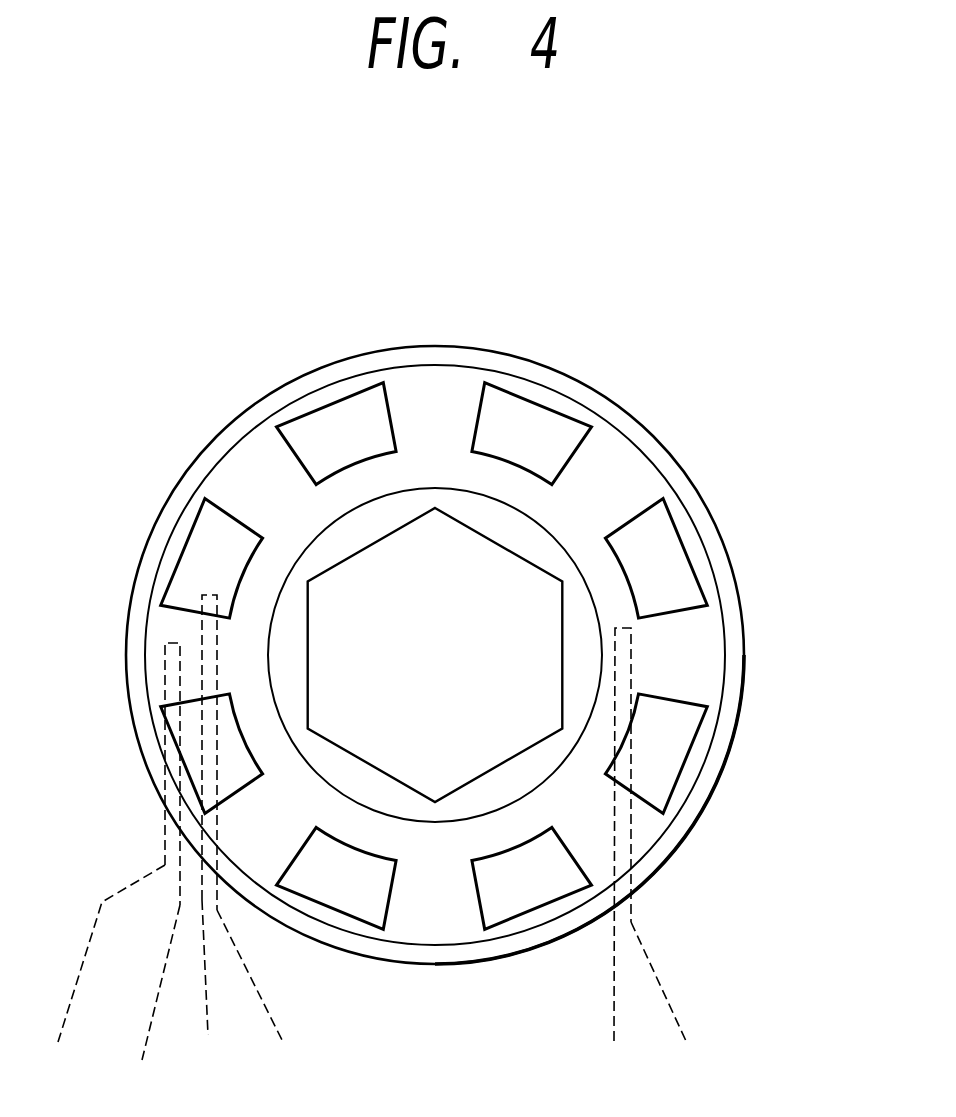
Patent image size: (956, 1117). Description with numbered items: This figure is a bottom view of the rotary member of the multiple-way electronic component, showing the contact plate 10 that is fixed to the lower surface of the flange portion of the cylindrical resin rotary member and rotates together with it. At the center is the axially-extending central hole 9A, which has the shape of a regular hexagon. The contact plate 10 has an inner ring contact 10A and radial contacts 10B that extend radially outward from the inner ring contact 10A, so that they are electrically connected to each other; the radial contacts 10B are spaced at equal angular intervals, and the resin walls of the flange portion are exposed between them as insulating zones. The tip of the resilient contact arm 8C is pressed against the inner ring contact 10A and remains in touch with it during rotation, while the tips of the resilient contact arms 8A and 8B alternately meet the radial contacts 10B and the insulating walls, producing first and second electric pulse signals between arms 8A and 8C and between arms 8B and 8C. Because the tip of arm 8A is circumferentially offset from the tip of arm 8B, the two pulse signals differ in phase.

The contact plate 10 is at (592, 241).
The inner ring contact 10A is at (503, 478).
The radial contacts 10B is at (432, 403).
The central hole 9A is at (402, 575).
The resilient contact arm 8A is at (168, 660).
The resilient contact arm 8B is at (200, 602).
The resilient contact arm 8C is at (627, 653).